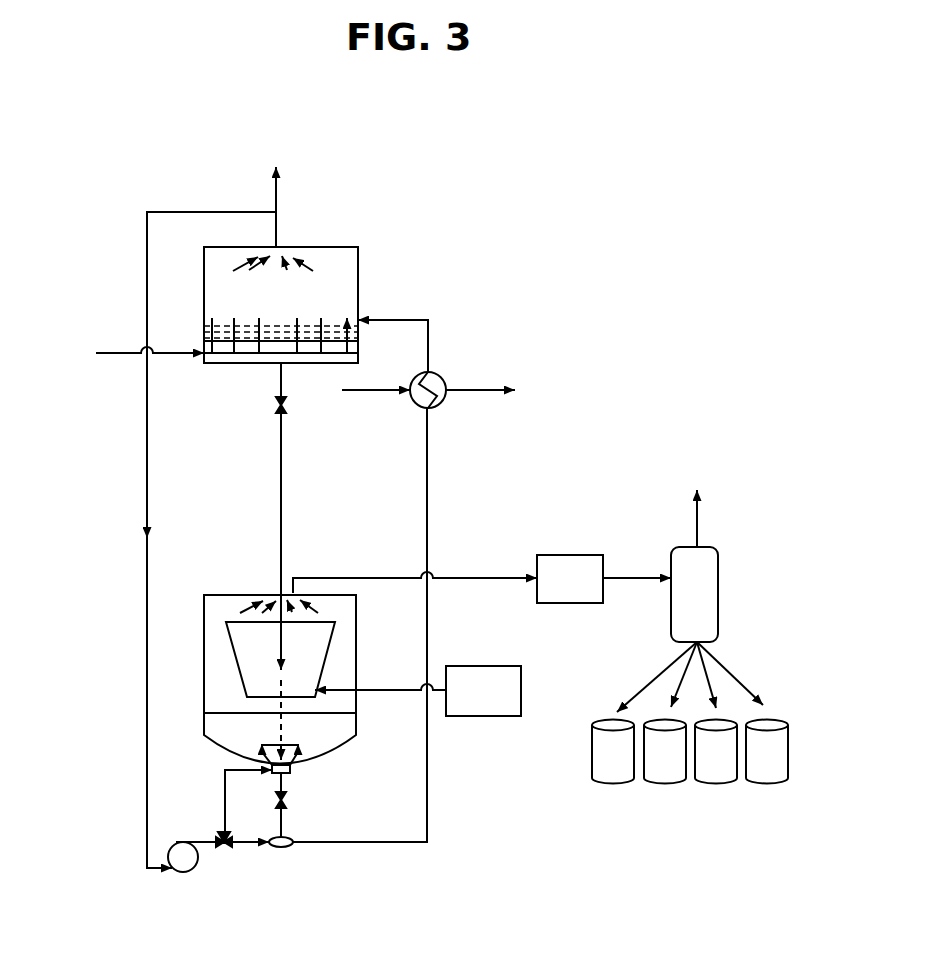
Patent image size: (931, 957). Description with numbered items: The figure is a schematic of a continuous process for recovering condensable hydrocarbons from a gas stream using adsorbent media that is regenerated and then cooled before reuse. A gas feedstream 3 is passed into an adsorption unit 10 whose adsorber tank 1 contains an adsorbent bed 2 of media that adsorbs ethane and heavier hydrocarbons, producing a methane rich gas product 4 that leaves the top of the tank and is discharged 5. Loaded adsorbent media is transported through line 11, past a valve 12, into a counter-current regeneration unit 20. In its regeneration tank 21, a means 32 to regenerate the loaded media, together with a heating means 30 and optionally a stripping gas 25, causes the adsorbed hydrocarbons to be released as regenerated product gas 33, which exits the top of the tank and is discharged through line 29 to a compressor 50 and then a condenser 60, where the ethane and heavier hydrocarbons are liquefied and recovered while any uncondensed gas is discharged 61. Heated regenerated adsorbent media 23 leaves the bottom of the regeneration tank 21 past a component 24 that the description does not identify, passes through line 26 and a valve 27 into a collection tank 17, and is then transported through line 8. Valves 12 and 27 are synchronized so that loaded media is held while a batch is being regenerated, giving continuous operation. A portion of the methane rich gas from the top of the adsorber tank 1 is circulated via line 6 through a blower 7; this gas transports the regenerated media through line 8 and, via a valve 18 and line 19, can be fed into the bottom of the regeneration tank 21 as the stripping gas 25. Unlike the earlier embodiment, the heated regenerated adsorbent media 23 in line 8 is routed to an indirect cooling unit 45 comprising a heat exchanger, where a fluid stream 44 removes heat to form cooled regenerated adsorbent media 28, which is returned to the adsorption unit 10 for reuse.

The adsorber tank 1 is at (204, 285).
The adsorbent bed 2 is at (270, 328).
The gas feedstream 3 is at (118, 353).
The methane rich gas product 4 is at (300, 260).
The discharge of methane rich gas 5 is at (277, 193).
The line 6 is at (146, 520).
The blower 7 is at (185, 870).
The line 8 is at (427, 790).
The adsorption unit 10 is at (393, 276).
The line 11 is at (281, 490).
The valve 12 is at (276, 408).
The collection tank 17 is at (285, 848).
The valve 18 is at (230, 852).
The line 19 is at (224, 806).
The counter-current regeneration unit 20 is at (231, 553).
The regeneration tank 21 is at (204, 655).
The heated regenerated adsorbent media 23 is at (283, 730).
The distributor 24 is at (291, 769).
The stripping gas 25 is at (266, 748).
The line 26 is at (283, 788).
The valve 27 is at (288, 803).
The cooled regenerated adsorbent media 28 is at (428, 338).
The line 29 is at (462, 578).
The heating means 30 is at (487, 716).
The means to regenerate the loaded adsorbent media 32 is at (332, 655).
The regenerated product gas 33 is at (243, 608).
The fluid stream 44 is at (378, 395).
The cooling unit 45 is at (440, 375).
The compressor 50 is at (568, 603).
The condenser 60 is at (718, 605).
The uncondensed gas discharge 61 is at (697, 525).